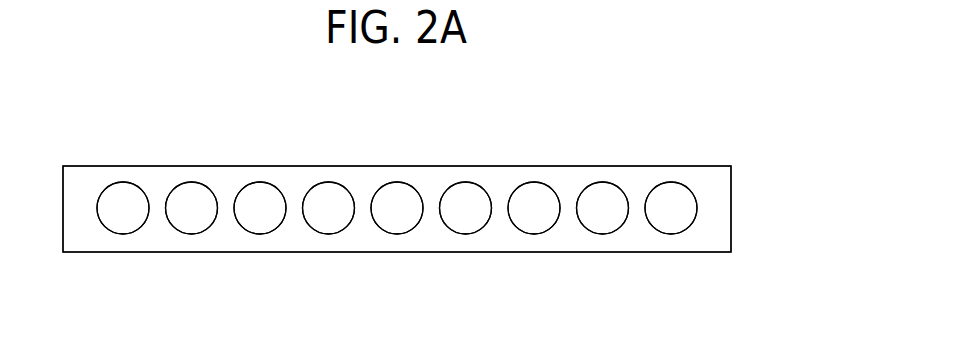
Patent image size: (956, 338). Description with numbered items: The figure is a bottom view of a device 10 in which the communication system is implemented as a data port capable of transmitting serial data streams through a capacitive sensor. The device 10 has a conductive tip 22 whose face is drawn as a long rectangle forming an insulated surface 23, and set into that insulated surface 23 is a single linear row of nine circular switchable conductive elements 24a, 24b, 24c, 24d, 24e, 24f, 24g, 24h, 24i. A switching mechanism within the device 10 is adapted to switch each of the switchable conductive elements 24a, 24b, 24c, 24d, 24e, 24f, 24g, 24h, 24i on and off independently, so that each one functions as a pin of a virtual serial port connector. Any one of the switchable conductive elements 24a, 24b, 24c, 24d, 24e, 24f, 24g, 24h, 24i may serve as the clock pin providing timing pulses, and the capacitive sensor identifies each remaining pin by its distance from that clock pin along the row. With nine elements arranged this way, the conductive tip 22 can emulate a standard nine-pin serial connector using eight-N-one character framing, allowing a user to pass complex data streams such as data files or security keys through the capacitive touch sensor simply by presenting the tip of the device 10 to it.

The device 10 is at (645, 120).
The conductive tip 22 is at (431, 180).
The insulated surface 23 is at (731, 208).
The switchable conductive element 24a is at (123, 234).
The switchable conductive element 24b is at (192, 234).
The switchable conductive element 24c is at (260, 234).
The switchable conductive element 24d is at (328, 234).
The switchable conductive element 24e is at (397, 234).
The switchable conductive element 24f is at (466, 234).
The switchable conductive element 24g is at (534, 234).
The switchable conductive element 24h is at (602, 234).
The switchable conductive element 24i is at (671, 234).